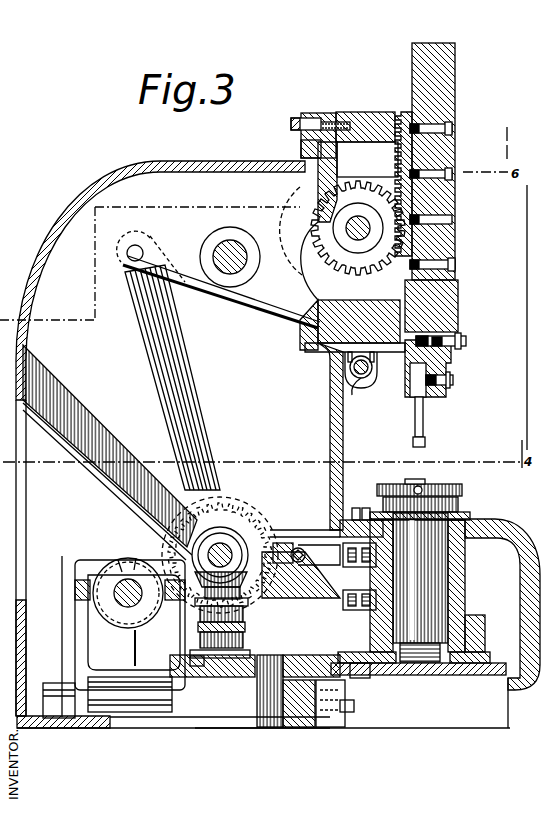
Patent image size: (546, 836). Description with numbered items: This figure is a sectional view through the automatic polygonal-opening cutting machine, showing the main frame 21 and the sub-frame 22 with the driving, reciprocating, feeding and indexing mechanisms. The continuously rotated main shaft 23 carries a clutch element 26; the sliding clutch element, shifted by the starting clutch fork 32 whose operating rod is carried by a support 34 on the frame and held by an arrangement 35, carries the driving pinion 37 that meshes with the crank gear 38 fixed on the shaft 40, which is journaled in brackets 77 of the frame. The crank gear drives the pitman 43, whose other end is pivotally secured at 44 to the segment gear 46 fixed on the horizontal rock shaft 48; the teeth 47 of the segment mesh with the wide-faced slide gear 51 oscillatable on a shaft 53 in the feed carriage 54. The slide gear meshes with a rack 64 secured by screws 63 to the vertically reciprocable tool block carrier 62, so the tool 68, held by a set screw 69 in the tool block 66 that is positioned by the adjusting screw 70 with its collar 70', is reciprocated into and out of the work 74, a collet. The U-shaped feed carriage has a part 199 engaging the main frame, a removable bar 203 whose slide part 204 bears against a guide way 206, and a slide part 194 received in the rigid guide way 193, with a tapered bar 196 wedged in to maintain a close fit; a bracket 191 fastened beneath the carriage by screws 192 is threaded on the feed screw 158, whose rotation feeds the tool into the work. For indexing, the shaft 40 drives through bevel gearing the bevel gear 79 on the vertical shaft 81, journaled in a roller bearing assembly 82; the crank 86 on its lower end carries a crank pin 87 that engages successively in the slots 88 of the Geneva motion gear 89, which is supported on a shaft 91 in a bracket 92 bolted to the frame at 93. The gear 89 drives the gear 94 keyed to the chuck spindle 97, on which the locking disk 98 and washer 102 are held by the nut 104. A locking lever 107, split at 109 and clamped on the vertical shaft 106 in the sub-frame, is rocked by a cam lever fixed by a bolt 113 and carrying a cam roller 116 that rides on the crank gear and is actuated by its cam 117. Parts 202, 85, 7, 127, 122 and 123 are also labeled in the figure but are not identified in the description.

The main frame 21 is at (30, 249).
The bar 203 is at (312, 115).
The part 199 is at (348, 122).
The feed carriage 54 is at (388, 112).
The slide part 204 is at (292, 126).
The member 202 is at (301, 150).
The guide way 206 is at (312, 196).
The slide gear 51 is at (372, 186).
The tool block carrier 62 is at (456, 200).
The screws 63 is at (452, 128).
The rack 64 is at (440, 170).
The shaft 53 is at (365, 246).
The tapered bar 196 is at (330, 301).
The gear teeth 47 is at (300, 342).
The slide part 194 is at (308, 352).
The rigid guide way 193 is at (330, 380).
The screws 192 is at (372, 362).
The bracket 191 is at (375, 377).
The feed screw 158 is at (362, 382).
The tool block 66 is at (452, 362).
The adjusting screw 70 is at (459, 339).
The collar 70' is at (463, 325).
The set screw 69 is at (455, 380).
The tool 68 is at (425, 422).
The rock shaft 48 is at (218, 252).
The pivot 44 is at (133, 262).
The segment gear 46 is at (243, 312).
The pitman 43 is at (178, 368).
The brackets 77 is at (110, 435).
The crank gear 38 is at (252, 492).
The shaft 40 is at (262, 502).
The bevel gear 79 is at (243, 581).
The vertical shaft 81 is at (248, 611).
The bearing 85 is at (250, 628).
The roller bearing assembly 82 is at (247, 648).
The crank 86 is at (252, 654).
The crank pin 87 is at (240, 653).
The slots 88 is at (300, 655).
The Geneva motion gear 89 is at (240, 680).
The shaft 91 is at (270, 735).
The bracket 92 is at (300, 727).
The bolts 93 is at (328, 735).
The arrangement 35 is at (195, 730).
The split 109 is at (354, 656).
The gear 94 is at (365, 680).
The locking lever 107 is at (352, 706).
The section line 7 is at (126, 648).
The main shaft 23 is at (118, 585).
The clutch element 26 is at (120, 578).
The driving pinion 37 is at (130, 558).
The starting clutch fork 32 is at (75, 610).
The support 34 is at (60, 683).
The vertical shaft 106 is at (358, 508).
The cam roller 116 is at (305, 555).
The cam 117 is at (301, 575).
The bolt 113 is at (338, 576).
The cap 127 is at (462, 488).
The work 74 is at (425, 481).
The housing 122 is at (460, 503).
The flange 123 is at (466, 515).
The chuck spindle 97 is at (420, 578).
The nut 104 is at (445, 690).
The sub-frame 22 is at (520, 535).
The washer 102 is at (470, 625).
The locking disk 98 is at (485, 648).